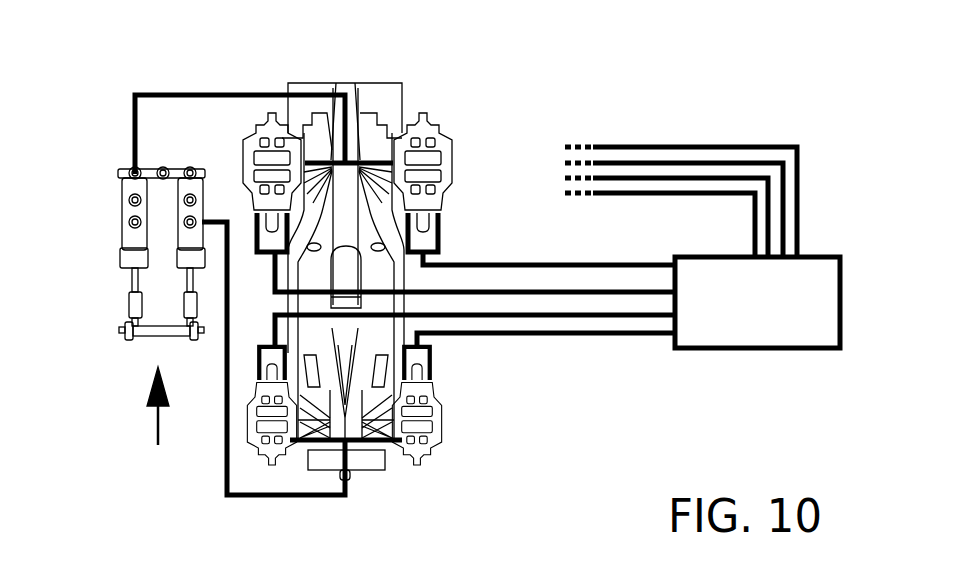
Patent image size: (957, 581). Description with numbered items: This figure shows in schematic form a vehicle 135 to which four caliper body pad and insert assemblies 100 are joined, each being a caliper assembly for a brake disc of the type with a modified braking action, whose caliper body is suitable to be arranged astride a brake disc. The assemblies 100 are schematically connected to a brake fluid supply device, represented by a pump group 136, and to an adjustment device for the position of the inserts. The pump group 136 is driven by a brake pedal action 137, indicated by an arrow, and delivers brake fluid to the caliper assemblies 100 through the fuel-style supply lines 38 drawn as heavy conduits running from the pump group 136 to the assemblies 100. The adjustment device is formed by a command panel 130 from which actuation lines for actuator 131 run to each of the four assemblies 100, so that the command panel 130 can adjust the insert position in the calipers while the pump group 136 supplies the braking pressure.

The fuel supply line 38 is at (212, 92).
The caliper body pad and insert assembly 100 is at (237, 139).
The command panel 130 is at (740, 325).
The actuation line for actuator 131 is at (573, 291).
The vehicle 135 is at (383, 282).
The pump group 136 is at (122, 223).
The brake pedal action 137 is at (153, 422).